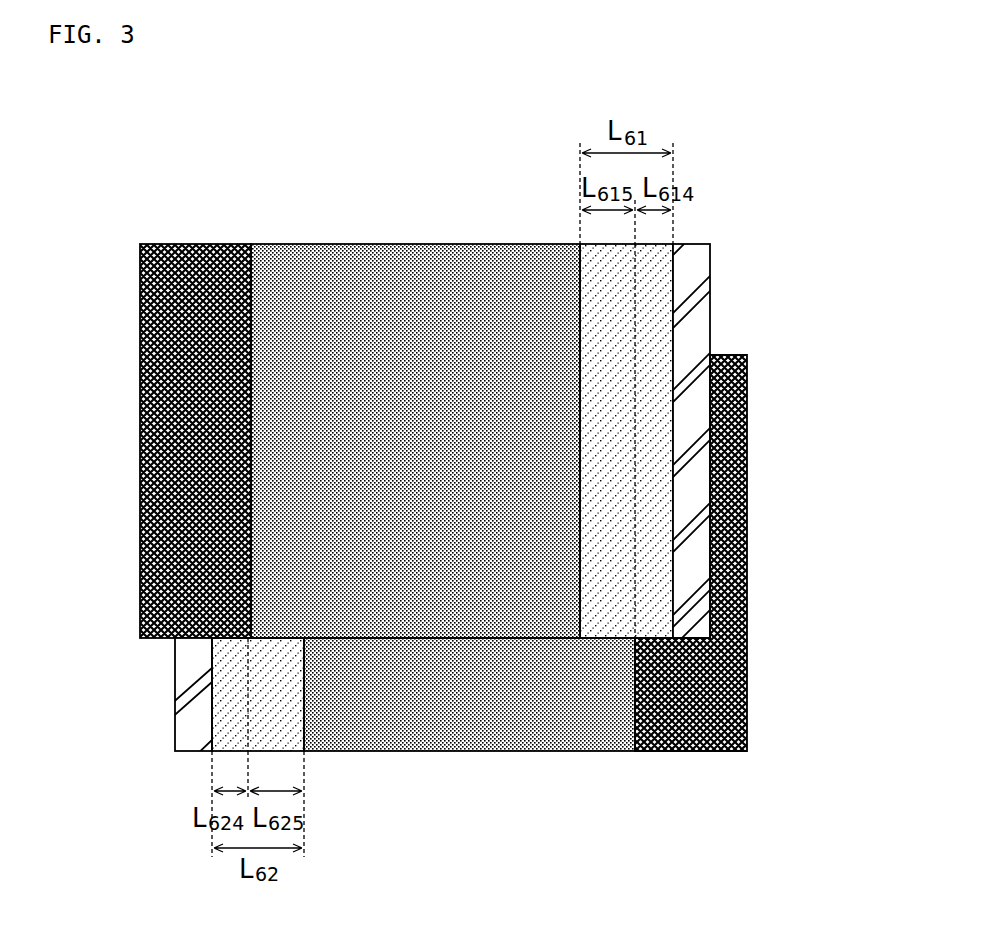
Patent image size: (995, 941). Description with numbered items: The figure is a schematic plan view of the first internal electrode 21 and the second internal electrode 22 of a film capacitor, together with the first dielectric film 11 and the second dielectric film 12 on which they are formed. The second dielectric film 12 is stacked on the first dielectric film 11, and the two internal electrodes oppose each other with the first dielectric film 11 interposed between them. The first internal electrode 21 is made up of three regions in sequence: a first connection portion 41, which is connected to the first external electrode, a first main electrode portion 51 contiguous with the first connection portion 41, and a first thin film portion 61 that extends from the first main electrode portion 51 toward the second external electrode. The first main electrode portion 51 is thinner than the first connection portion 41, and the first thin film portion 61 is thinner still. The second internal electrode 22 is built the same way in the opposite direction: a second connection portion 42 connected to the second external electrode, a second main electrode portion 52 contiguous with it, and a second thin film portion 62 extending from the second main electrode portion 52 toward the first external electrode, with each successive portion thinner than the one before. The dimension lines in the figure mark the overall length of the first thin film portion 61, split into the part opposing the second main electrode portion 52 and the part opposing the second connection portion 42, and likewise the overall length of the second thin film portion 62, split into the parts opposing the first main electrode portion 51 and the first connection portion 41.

The first dielectric film 11 is at (698, 308).
The second dielectric film 12 is at (190, 687).
The first internal electrode 21 is at (185, 183).
The second internal electrode 22 is at (688, 826).
The first connection portion 41 is at (188, 258).
The second connection portion 42 is at (697, 727).
The first main electrode portion 51 is at (368, 258).
The second main electrode portion 52 is at (513, 712).
The first thin film portion 61 is at (612, 292).
The second thin film portion 62 is at (262, 715).